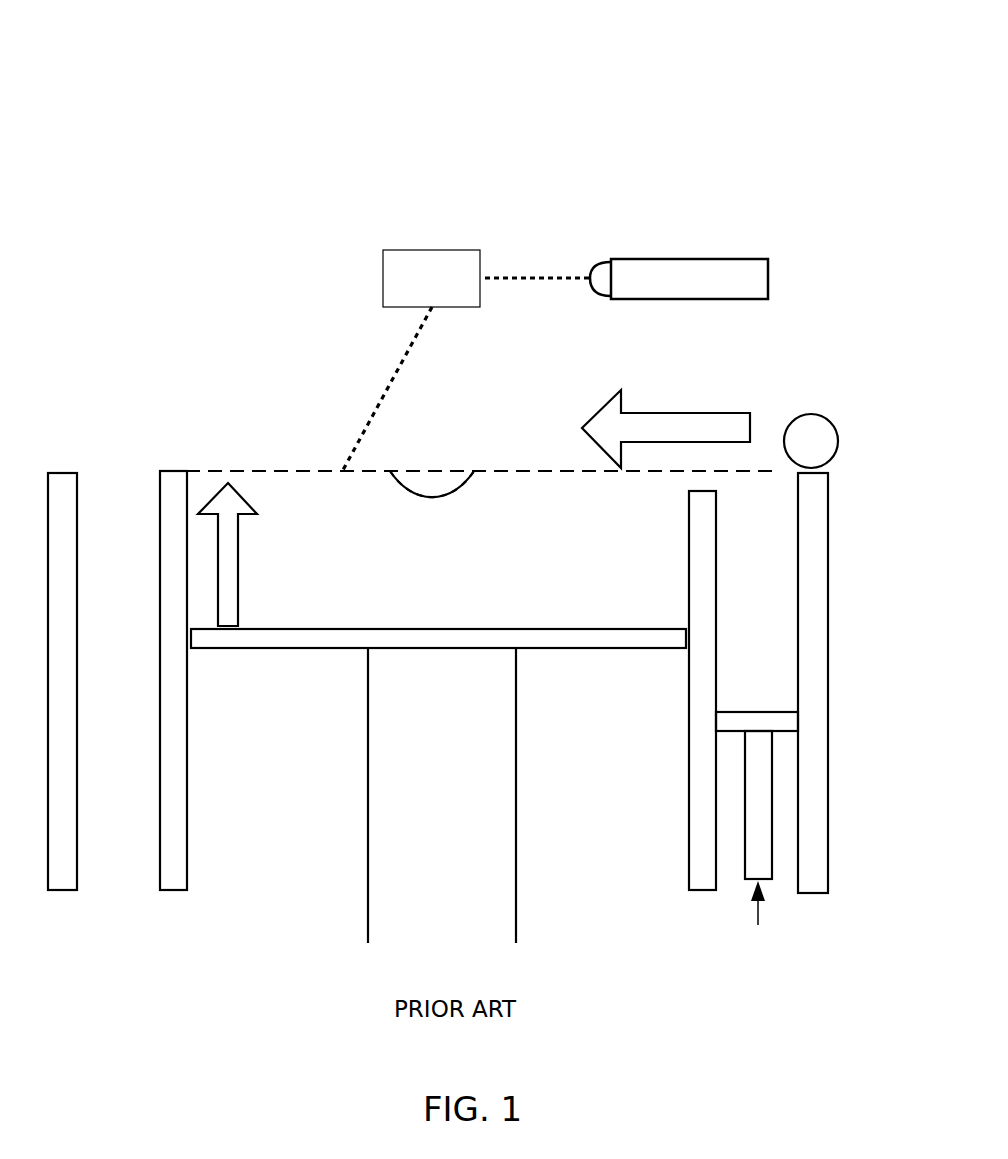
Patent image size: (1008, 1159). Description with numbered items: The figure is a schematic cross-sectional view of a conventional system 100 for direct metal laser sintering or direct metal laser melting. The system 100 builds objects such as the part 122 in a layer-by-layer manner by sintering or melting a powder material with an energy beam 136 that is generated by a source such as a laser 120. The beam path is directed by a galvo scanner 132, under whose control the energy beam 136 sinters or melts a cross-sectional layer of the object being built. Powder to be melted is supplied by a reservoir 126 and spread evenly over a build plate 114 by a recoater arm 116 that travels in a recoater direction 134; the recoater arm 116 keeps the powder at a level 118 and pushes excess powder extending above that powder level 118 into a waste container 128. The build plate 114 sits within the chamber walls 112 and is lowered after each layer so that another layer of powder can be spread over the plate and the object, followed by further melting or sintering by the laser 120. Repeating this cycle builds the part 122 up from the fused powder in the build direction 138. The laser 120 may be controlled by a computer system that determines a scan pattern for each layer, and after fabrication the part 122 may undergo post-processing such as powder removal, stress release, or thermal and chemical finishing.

The system 100 is at (162, 38).
The powder bed chamber walls 112 is at (578, 528).
The build plate 114 is at (640, 627).
The recoater arm 116 is at (809, 414).
The powder level 118 is at (249, 470).
The laser 120 is at (639, 259).
The part 122 is at (377, 540).
The reservoir 126 is at (766, 568).
The waste container 128 is at (143, 790).
The galvo scanner 132 is at (432, 250).
The direction 134 is at (600, 409).
The energy beam 136 is at (386, 388).
The direction 138 is at (213, 499).